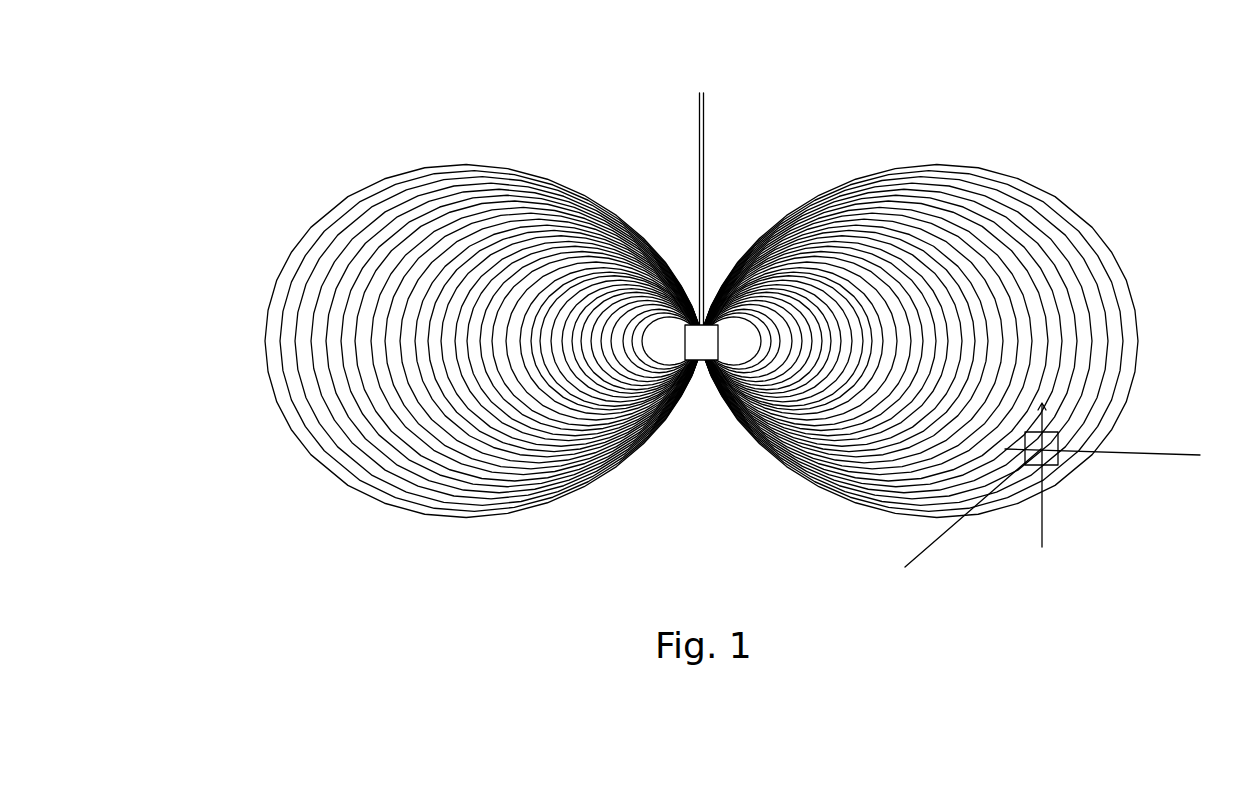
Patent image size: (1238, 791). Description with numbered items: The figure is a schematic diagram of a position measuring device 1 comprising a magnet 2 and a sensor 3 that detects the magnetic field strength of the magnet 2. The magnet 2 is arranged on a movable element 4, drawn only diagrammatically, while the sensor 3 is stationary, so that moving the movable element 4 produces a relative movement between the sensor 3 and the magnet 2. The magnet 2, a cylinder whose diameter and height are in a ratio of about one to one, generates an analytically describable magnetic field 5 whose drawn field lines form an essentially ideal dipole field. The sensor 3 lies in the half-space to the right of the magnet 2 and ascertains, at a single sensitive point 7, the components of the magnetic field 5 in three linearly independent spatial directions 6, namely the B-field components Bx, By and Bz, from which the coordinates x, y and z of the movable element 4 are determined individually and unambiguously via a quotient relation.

The position measuring device 1 is at (889, 94).
The magnet 2 is at (703, 350).
The sensor 3 is at (1043, 447).
The movable element 4 is at (707, 143).
The magnetic field 5 is at (278, 345).
The spatial directions 6 is at (1061, 427).
The sensitive point 7 is at (1047, 450).